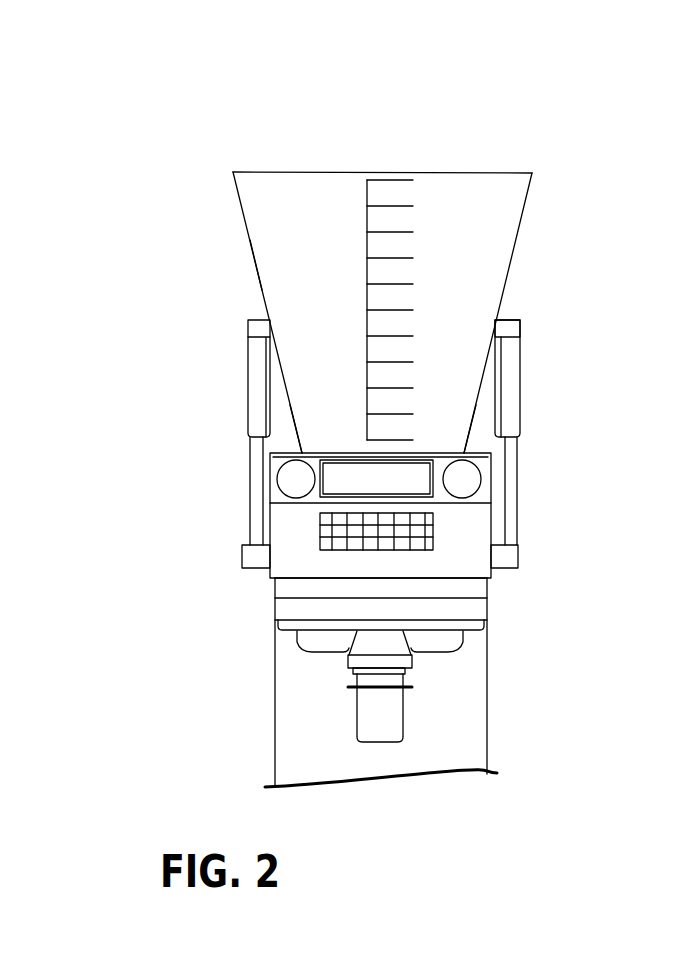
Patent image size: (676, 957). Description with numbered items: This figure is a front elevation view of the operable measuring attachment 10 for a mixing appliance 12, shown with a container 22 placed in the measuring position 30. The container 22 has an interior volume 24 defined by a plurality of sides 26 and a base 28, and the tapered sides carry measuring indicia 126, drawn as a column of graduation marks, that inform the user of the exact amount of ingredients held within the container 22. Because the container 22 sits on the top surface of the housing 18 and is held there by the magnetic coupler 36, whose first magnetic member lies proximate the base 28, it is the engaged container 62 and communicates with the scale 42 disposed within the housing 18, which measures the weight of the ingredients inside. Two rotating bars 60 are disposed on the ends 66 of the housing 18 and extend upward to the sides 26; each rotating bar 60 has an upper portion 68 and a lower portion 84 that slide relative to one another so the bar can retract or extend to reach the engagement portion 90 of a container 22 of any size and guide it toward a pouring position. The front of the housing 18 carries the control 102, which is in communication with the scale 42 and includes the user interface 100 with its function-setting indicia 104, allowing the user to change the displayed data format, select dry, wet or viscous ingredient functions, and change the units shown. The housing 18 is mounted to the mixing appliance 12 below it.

The operable measuring attachment 10 is at (212, 497).
The mixing appliance 12 is at (489, 717).
The housing 18 is at (493, 598).
The container 22 is at (531, 208).
The interior volume 24 is at (272, 166).
The sides 26 is at (505, 263).
The base 28 is at (456, 448).
The measuring position 30 is at (228, 282).
The magnetic coupler 36 is at (292, 445).
The scale 42 is at (422, 487).
The rotating bar 60 is at (512, 443).
The engaged container 62 is at (240, 212).
The ends 66 is at (270, 572).
The upper portion 68 is at (255, 356).
The lower portion 84 is at (515, 497).
The engagement portion 90 is at (508, 326).
The user interface 100 is at (293, 482).
The control 102 is at (400, 550).
The function-setting indicia 104 is at (330, 472).
The measuring indicia 126 is at (395, 206).